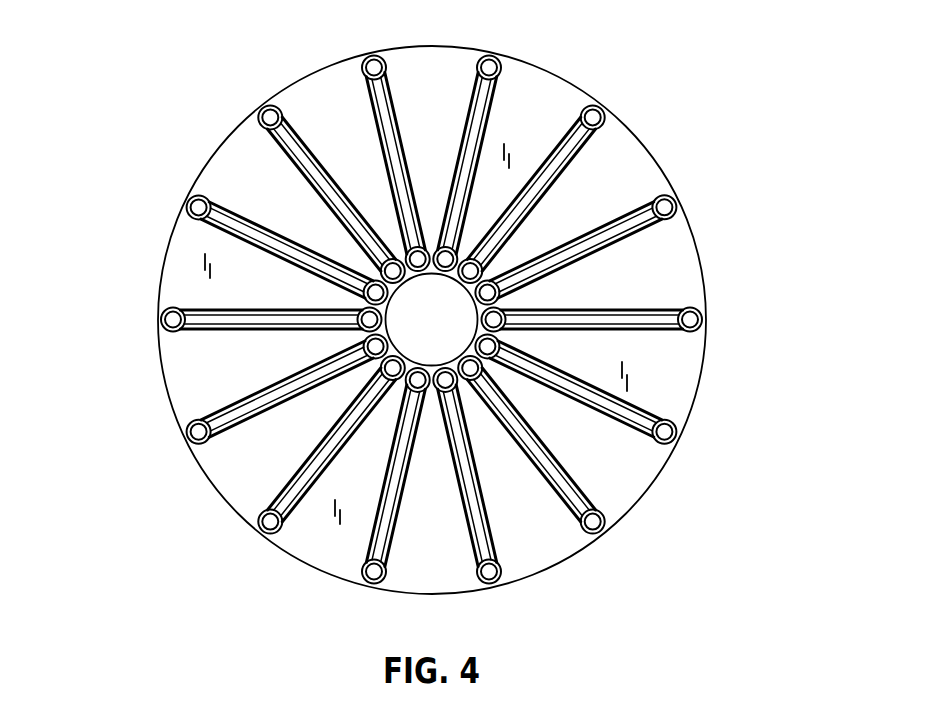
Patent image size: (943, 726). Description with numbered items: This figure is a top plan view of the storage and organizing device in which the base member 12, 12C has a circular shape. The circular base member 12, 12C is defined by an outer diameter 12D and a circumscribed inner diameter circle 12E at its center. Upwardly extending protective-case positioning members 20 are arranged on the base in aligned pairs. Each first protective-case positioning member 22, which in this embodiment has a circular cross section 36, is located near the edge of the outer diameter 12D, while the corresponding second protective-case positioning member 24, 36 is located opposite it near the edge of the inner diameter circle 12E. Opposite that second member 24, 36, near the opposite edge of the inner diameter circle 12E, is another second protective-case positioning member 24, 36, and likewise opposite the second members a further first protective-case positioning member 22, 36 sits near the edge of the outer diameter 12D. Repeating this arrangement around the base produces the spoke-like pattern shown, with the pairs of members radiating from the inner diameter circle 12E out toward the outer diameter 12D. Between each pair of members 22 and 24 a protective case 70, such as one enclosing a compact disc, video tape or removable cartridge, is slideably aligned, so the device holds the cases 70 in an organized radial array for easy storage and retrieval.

The base member 12 is at (441, 316).
The circular base member 12C is at (441, 316).
The outer diameter 12D is at (628, 515).
The inner diameter circle 12E is at (477, 320).
The protective-case positioning member 20 is at (434, 308).
The first protective-case positioning member 22 is at (698, 308).
The second protective-case positioning member 24 is at (702, 455).
The circular cross section 36 is at (454, 308).
The protective case 70 is at (494, 113).